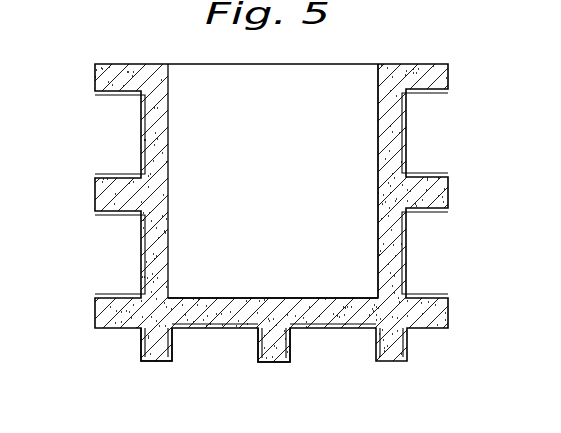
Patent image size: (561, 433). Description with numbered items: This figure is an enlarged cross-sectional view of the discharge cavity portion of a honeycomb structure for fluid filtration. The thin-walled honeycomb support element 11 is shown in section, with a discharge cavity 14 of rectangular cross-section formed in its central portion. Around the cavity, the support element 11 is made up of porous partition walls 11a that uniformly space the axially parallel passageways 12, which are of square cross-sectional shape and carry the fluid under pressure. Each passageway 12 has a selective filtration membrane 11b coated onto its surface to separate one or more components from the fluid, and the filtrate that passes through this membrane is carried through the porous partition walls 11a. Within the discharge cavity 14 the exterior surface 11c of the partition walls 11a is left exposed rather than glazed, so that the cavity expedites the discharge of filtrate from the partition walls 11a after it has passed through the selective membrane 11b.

The honeycomb support element 11 is at (408, 348).
The partition walls 11a is at (283, 299).
The selective filtration membrane 11b is at (216, 330).
The exterior surface of partition walls 11c is at (378, 160).
The passageways 12 is at (118, 160).
The discharge cavity 14 is at (278, 196).